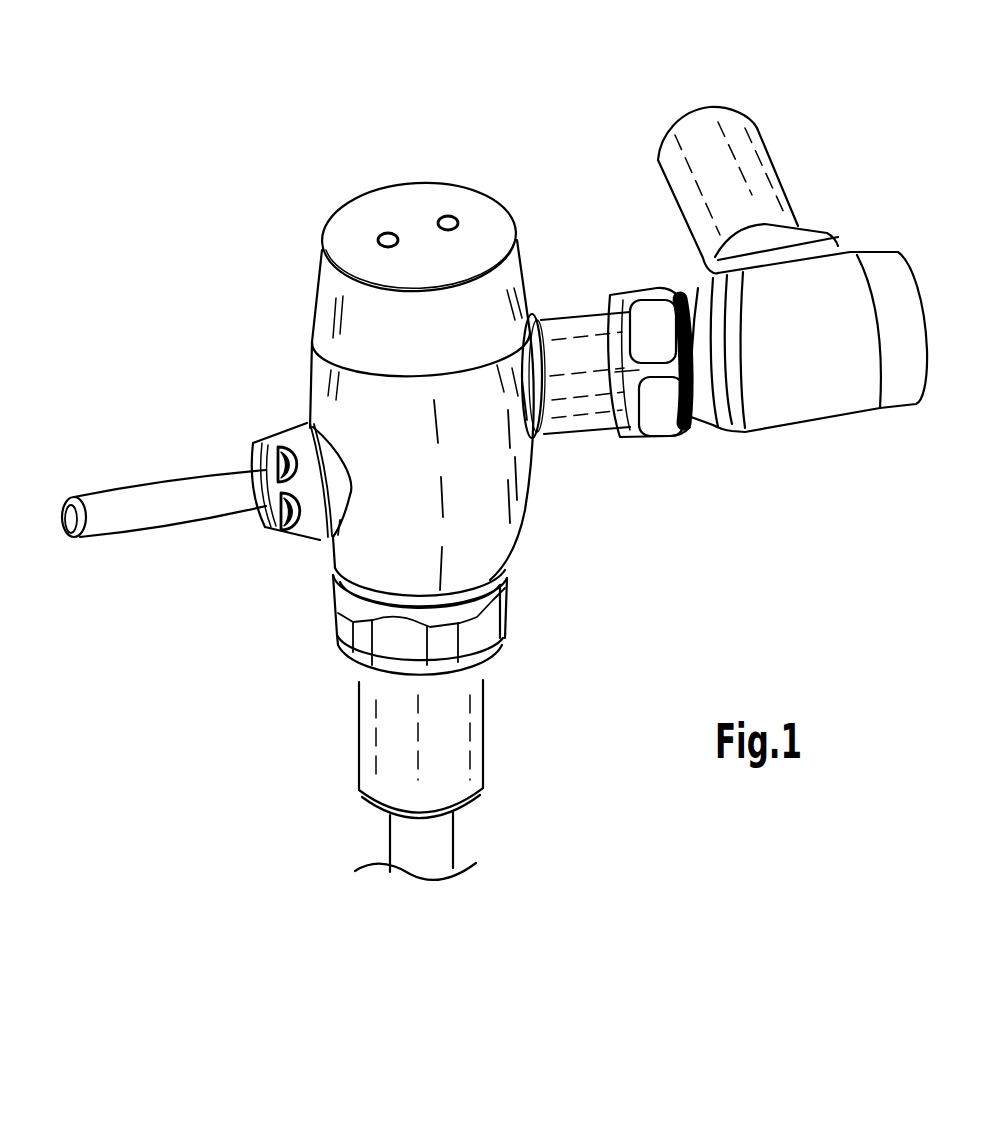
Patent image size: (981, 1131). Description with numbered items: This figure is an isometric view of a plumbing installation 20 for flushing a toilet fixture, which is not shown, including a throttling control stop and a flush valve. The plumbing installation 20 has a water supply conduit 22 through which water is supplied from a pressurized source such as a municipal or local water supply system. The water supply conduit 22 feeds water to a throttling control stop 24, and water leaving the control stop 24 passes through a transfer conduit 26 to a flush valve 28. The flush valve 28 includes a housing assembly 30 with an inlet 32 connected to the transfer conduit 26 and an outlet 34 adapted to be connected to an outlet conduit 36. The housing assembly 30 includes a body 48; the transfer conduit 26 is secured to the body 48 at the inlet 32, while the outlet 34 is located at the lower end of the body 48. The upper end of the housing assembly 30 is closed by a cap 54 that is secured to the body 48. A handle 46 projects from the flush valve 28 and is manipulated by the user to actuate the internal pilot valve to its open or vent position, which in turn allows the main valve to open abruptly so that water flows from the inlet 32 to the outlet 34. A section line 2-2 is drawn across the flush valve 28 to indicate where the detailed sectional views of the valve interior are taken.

The section line 2- 2 is at (427, 160).
The plumbing installation 20 is at (742, 548).
The water supply conduit 22 is at (743, 172).
The throttling control stop 24 is at (793, 397).
The transfer conduit 26 is at (577, 407).
The flush valve 28 is at (108, 328).
The housing assembly 30 is at (478, 503).
The inlet 32 is at (553, 340).
The outlet 34 is at (345, 595).
The outlet conduit 36 is at (463, 722).
The handle 46 is at (103, 455).
The body 48 is at (310, 398).
The cap 54 is at (346, 235).